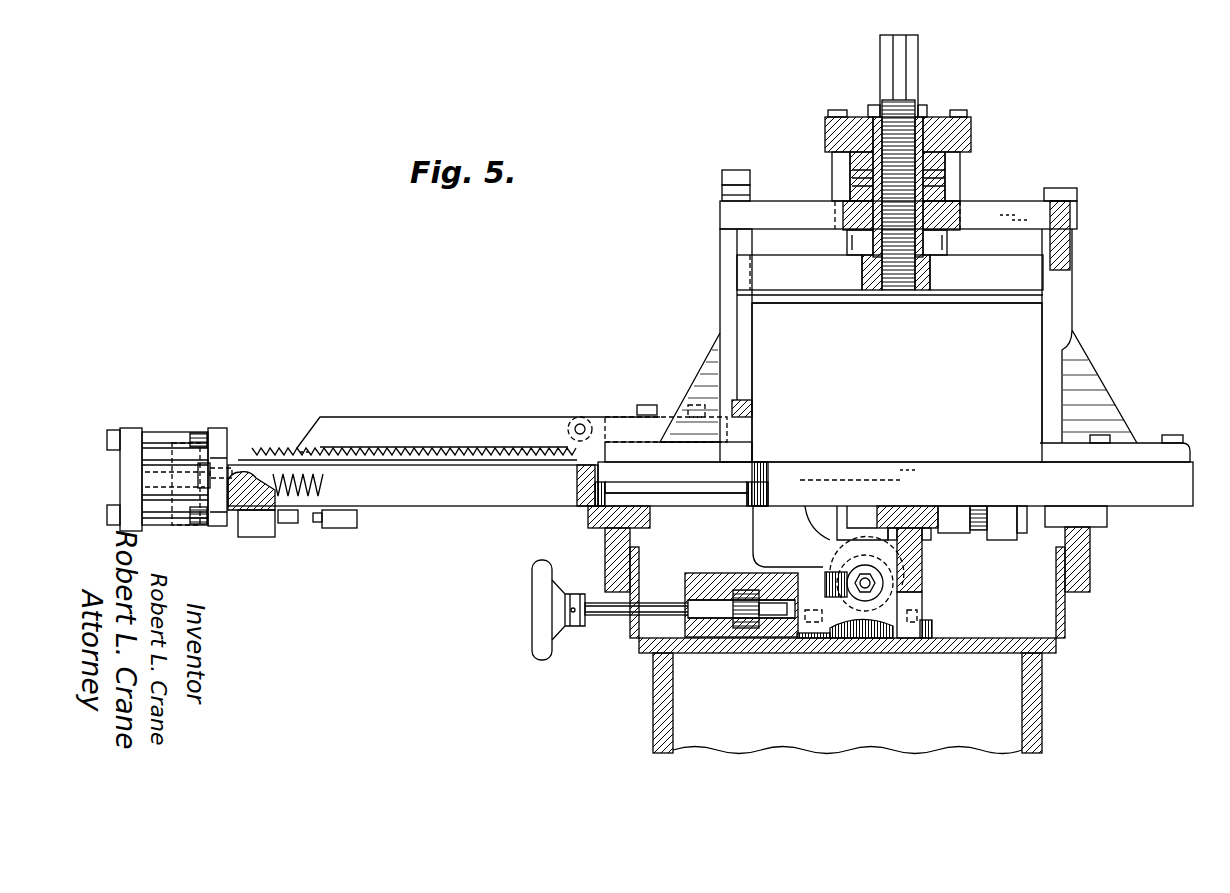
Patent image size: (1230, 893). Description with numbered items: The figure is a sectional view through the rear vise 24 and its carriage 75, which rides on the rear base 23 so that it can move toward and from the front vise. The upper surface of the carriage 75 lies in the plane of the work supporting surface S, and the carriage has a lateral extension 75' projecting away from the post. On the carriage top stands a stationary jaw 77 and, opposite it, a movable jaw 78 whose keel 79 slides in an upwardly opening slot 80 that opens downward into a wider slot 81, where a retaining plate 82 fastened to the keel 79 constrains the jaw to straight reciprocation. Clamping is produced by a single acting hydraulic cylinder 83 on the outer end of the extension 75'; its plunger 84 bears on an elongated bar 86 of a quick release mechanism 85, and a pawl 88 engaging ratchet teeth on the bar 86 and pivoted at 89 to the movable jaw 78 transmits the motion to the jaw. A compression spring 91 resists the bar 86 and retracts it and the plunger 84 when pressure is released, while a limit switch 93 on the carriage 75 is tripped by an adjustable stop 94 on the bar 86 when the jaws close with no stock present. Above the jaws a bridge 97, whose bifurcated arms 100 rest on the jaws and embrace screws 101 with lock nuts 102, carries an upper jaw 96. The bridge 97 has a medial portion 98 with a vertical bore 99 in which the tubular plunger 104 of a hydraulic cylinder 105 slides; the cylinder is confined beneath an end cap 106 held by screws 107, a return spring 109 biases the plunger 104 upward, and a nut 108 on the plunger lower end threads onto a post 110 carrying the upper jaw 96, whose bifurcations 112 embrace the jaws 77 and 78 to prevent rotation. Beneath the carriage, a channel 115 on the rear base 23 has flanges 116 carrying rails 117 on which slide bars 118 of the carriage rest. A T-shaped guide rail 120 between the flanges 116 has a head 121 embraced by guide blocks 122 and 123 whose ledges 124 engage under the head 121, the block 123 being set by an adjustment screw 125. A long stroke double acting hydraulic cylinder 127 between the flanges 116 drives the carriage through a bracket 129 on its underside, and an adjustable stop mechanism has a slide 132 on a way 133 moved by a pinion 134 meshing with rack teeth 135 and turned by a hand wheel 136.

The rear base 23 is at (636, 715).
The rear vise 24 is at (649, 294).
The work supporting surface S is at (935, 462).
The carriage 75 is at (895, 467).
The carriage extension 75' is at (413, 502).
The stationary jaw 77 is at (1065, 320).
The movable jaw 78 is at (725, 313).
The keel 79 is at (690, 487).
The slot 80 is at (780, 462).
The wider slot 81 is at (750, 497).
The retaining plate 82 is at (650, 493).
The hydraulic cylinder 83 is at (165, 460).
The plunger 84 is at (235, 463).
The quick release mechanism 85 is at (326, 403).
The bar 86 is at (260, 455).
The pawl 88 is at (374, 418).
The pivotal connection 89 is at (583, 424).
The compression spring 91 is at (323, 498).
The limit switch 93 is at (340, 530).
The adjustable stop 94 is at (290, 524).
The upper jaw 96 is at (940, 285).
The bridge 97 is at (1003, 212).
The medial portion 98 is at (972, 212).
The bore 99 is at (950, 222).
The arms 100 is at (780, 190).
The screws 101 is at (728, 170).
The lock nuts 102 is at (722, 190).
The plunger 104 is at (873, 117).
The hydraulic cylinder 105 is at (991, 128).
The end cap 106 is at (932, 117).
The screws 107 is at (835, 160).
The nut 108 is at (847, 240).
The plunger return spring 109 is at (850, 181).
The post 110 is at (880, 65).
The bifurcations 112 is at (793, 290).
The channel 115 is at (1065, 623).
The flanges 116 is at (639, 555).
The rail 117 is at (605, 553).
The slide bars 118 is at (588, 520).
The guide rail 120 is at (922, 565).
The head 121 is at (912, 506).
The guide block 122 is at (858, 512).
The guide block 123 is at (950, 518).
The ledges 124 is at (925, 540).
The adjustment screw 125 is at (980, 532).
The hydraulic cylinder 127 is at (885, 595).
The bracket 129 is at (800, 530).
The slide 132 is at (742, 582).
The way 133 is at (755, 640).
The pinion 134 is at (740, 628).
The rack teeth 135 is at (803, 650).
The hand wheel 136 is at (532, 608).